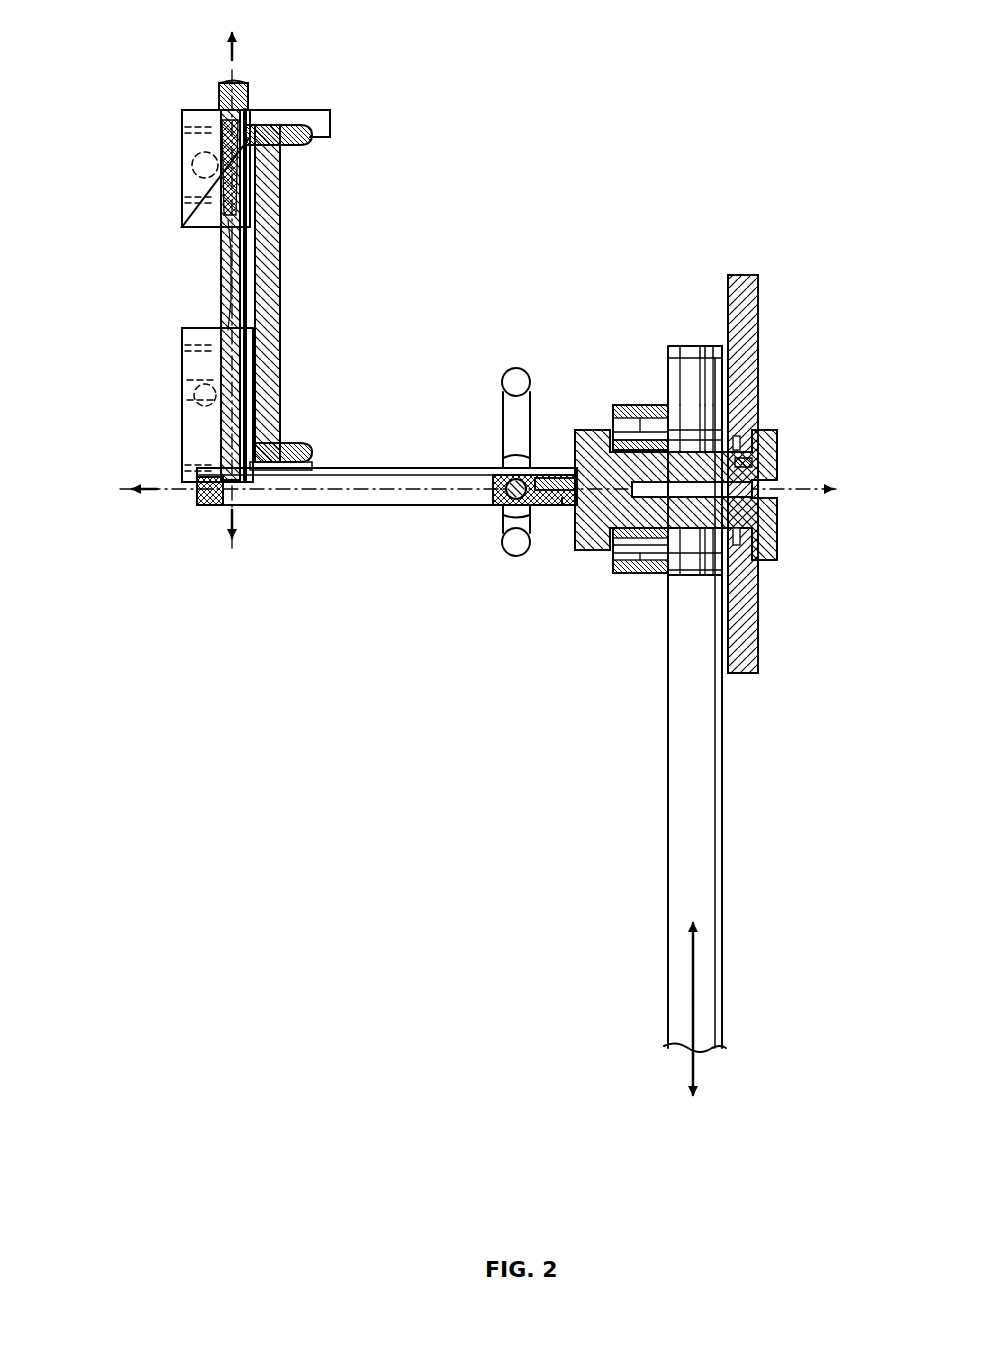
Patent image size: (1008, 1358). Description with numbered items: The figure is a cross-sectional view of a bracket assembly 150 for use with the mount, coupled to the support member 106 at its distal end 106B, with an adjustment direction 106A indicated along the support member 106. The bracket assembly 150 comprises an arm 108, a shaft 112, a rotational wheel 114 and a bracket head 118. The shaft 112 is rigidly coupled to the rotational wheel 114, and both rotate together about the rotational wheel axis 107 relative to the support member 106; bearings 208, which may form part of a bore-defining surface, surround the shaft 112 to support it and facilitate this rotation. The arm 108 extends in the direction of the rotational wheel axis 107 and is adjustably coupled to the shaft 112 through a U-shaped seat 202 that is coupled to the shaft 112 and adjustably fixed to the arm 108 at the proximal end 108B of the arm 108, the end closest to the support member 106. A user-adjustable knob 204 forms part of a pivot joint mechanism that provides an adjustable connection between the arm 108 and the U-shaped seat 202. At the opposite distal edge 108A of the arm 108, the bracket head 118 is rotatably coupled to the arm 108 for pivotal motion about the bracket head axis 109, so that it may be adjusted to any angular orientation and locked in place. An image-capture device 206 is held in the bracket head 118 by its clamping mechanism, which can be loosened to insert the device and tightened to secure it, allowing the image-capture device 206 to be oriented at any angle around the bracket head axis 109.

The support member 106 is at (695, 758).
The column vertical adjustment direction 106A is at (690, 983).
The distal end 106B is at (680, 582).
The rotational wheel axis 107 is at (172, 489).
The arm 108 is at (383, 490).
The distal edge 108A is at (222, 500).
The proximal end 108B is at (493, 475).
The bracket head axis 109 is at (230, 50).
The shaft 112 is at (700, 470).
The rotational wheel 114 is at (745, 592).
The bracket head 118 is at (225, 253).
The bracket assembly 150 is at (800, 140).
The U-shaped seat 202 is at (562, 498).
The user-adjustable knob 204 is at (513, 436).
The image-capture device 206 is at (265, 295).
The bearings 208 is at (618, 430).